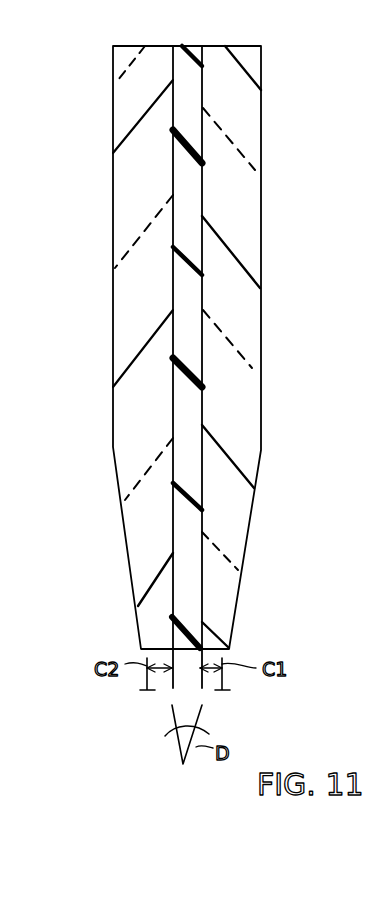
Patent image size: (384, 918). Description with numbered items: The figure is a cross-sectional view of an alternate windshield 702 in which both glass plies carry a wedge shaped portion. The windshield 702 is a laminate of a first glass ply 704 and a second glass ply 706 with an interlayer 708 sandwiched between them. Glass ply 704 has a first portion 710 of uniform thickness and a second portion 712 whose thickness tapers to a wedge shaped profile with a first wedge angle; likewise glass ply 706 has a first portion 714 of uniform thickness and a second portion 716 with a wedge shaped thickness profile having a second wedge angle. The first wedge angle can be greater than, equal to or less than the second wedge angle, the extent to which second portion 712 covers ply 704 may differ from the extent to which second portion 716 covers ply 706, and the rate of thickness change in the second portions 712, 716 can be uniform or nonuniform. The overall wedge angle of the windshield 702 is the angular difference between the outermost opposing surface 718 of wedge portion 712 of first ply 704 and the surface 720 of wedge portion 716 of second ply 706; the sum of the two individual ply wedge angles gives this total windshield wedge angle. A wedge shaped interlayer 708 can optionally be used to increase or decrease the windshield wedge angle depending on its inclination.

The windshield 702 is at (292, 91).
The glass ply 704 is at (262, 191).
The glass ply 706 is at (113, 177).
The interlayer 708 is at (203, 212).
The first portion 710 is at (262, 317).
The second portion 712 is at (252, 500).
The first portion 714 is at (113, 262).
The second portion 716 is at (124, 520).
The outermost opposing surface 718 is at (239, 594).
The surface 720 is at (136, 592).